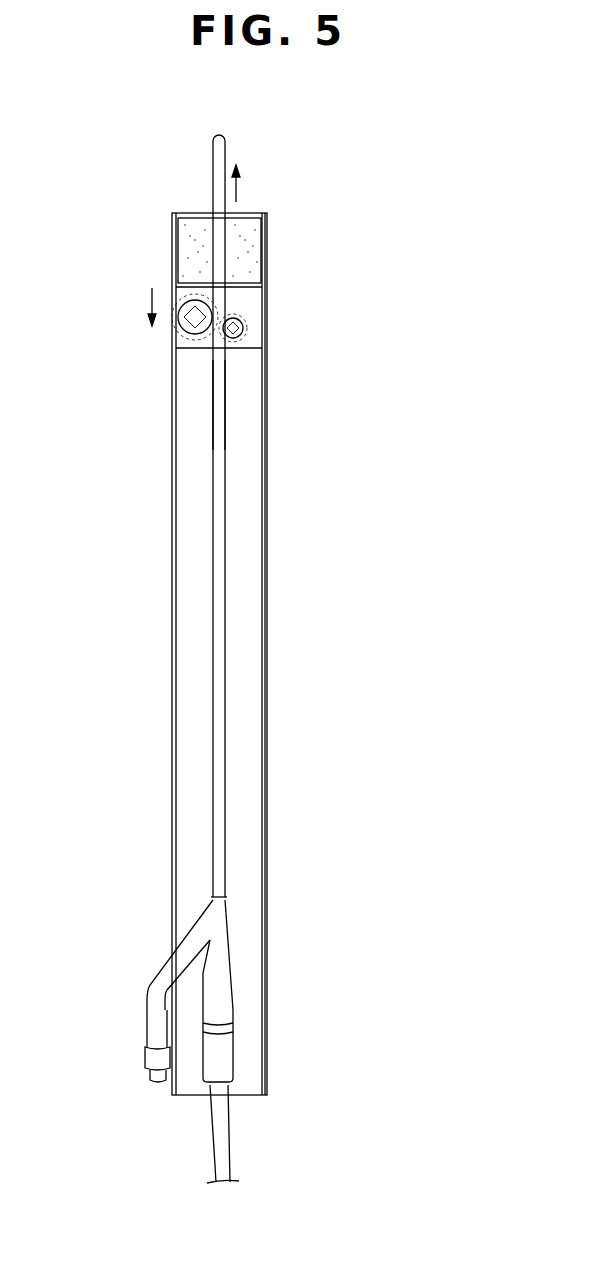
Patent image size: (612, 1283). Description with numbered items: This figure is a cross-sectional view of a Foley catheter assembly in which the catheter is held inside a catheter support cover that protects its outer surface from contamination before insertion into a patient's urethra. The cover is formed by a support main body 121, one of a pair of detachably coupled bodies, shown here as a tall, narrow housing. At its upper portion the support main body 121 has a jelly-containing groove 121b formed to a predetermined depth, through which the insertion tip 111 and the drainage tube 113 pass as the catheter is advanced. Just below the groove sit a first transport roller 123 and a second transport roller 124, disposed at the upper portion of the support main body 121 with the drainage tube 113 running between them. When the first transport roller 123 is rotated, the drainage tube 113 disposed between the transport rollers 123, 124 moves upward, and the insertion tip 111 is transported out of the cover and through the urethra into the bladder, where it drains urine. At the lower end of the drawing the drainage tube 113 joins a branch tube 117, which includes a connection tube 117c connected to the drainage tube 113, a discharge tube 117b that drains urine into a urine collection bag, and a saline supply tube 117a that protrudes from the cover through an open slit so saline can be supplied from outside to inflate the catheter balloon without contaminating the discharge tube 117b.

The insertion tip 111 is at (217, 175).
The drainage tube 113 is at (220, 405).
The branch tube 117 is at (316, 1023).
The saline supply tube 117a is at (266, 1046).
The discharge tube 117b is at (220, 990).
The connection tube 117c is at (222, 915).
The support main body 121 is at (262, 228).
The jelly-containing groove 121b is at (172, 227).
The first transport roller 123 is at (180, 322).
The transport roller 124 is at (245, 330).